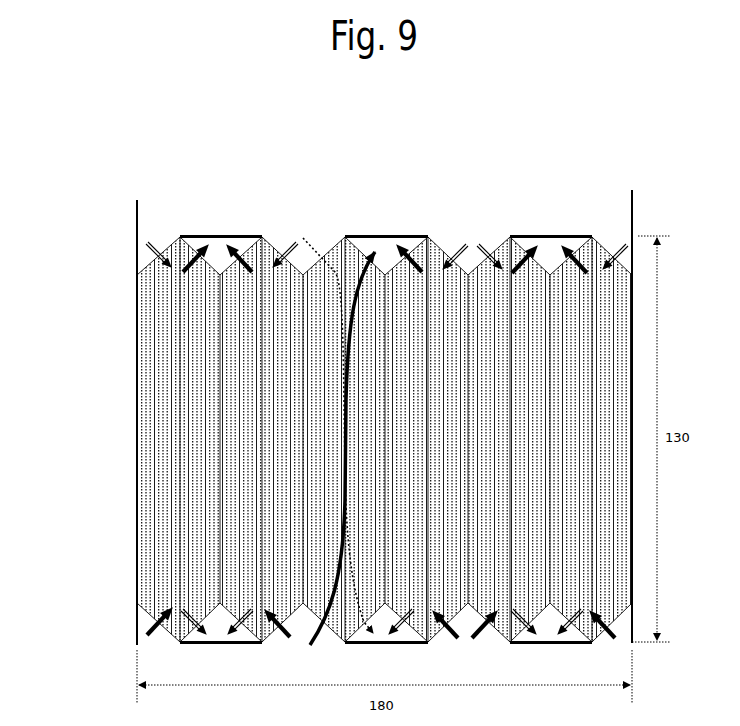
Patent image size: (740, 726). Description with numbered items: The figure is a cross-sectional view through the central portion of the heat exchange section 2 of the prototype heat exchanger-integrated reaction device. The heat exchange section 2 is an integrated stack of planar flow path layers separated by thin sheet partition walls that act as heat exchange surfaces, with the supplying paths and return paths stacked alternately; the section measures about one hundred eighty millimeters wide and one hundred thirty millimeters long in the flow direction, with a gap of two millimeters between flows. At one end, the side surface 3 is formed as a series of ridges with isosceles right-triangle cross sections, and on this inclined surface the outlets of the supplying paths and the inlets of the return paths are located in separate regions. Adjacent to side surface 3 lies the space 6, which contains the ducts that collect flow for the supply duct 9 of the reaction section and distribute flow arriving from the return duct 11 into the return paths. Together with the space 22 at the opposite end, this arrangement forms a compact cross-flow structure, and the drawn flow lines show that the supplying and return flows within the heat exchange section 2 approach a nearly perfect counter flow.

The heat exchange section 2 is at (120, 275).
The side surface 3 is at (440, 266).
The space 6 is at (120, 232).
The supply duct 9 is at (120, 163).
The return duct 11 is at (347, 416).
The space 22 is at (120, 607).